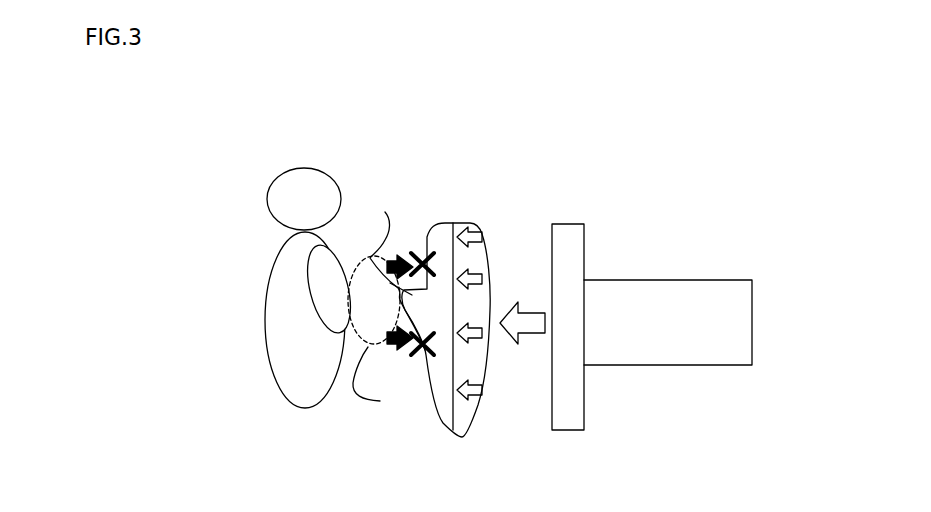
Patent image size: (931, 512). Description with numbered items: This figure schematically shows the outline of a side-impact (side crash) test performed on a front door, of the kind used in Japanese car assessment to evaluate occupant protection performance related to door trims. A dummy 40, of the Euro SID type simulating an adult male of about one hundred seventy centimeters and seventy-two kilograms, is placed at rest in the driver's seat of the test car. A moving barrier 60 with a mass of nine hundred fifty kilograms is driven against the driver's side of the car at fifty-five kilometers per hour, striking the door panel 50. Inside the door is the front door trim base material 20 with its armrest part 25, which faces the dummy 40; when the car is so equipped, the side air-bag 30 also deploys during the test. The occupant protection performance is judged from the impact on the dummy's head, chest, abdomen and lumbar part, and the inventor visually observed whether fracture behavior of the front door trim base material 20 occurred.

The front door trim base material 20 is at (433, 224).
The armrest part 25 is at (385, 212).
The side air-bag 30 is at (380, 401).
The dummy 40 is at (266, 307).
The door panel 50 is at (470, 222).
The moving barrier 60 is at (635, 366).